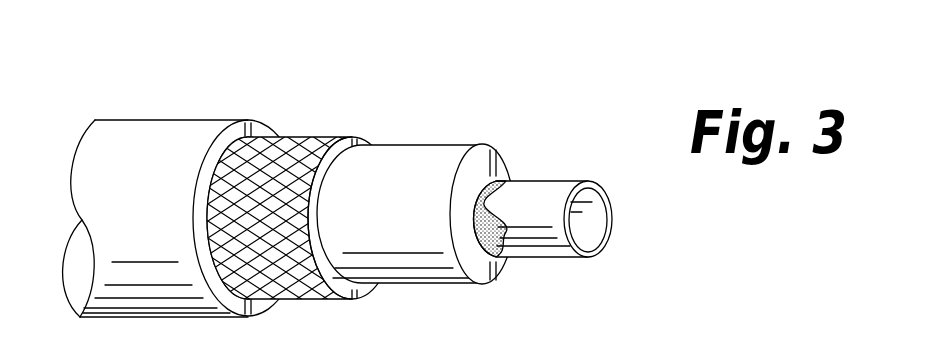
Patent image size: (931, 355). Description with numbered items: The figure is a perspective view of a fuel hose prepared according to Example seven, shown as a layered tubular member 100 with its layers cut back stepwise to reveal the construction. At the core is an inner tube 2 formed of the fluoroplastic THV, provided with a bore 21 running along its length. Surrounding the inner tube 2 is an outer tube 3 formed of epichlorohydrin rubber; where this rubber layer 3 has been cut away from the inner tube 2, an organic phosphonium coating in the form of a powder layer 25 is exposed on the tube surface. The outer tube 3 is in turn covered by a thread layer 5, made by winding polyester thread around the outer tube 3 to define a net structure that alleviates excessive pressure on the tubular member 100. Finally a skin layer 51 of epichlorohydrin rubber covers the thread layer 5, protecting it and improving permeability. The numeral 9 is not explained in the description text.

The tubular member 100 is at (175, 110).
The skin layer 51 is at (160, 293).
The thread layer 5 is at (297, 157).
The outer tube 3 is at (408, 160).
The inner tube 2 is at (560, 188).
The bore 21 is at (587, 233).
The powder layer 25 is at (493, 182).
The hose end 9 is at (501, 348).